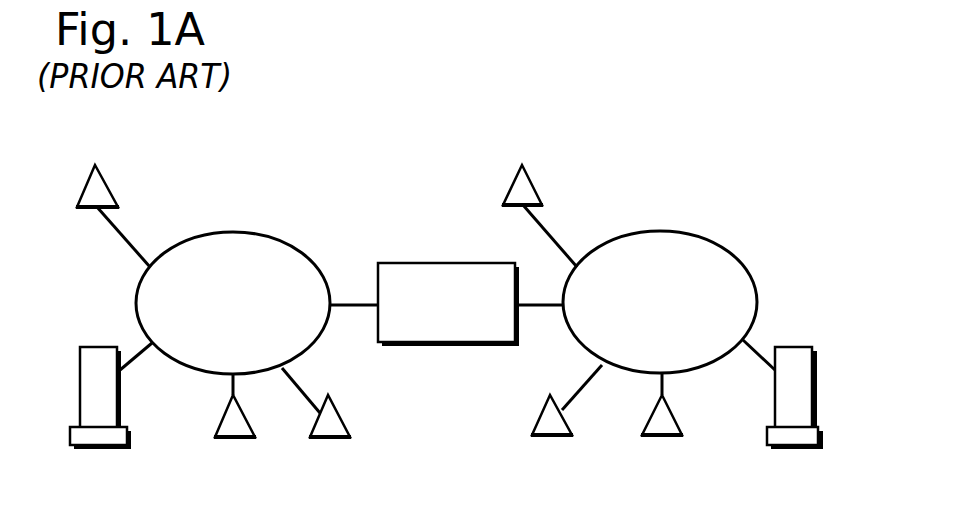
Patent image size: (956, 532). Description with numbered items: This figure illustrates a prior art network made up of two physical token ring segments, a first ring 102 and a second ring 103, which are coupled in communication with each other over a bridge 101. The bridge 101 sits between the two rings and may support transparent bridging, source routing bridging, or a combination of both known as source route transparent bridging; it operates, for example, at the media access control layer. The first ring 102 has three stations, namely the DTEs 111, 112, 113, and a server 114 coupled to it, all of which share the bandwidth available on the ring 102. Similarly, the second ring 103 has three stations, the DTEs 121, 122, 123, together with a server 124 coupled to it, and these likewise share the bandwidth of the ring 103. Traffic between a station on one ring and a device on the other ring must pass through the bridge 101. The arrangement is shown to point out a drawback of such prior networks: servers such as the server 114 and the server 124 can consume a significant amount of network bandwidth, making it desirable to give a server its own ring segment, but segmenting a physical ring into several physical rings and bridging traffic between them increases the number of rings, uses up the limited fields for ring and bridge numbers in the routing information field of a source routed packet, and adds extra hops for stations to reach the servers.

The bridge 101 is at (504, 333).
The ring 102 is at (247, 230).
The ring 103 is at (677, 230).
The DTE 111 is at (110, 189).
The DTE 112 is at (318, 435).
The DTE 113 is at (234, 439).
The server 114 is at (98, 425).
The DTE 121 is at (537, 189).
The DTE 122 is at (563, 434).
The DTE 123 is at (661, 438).
The server 124 is at (794, 424).